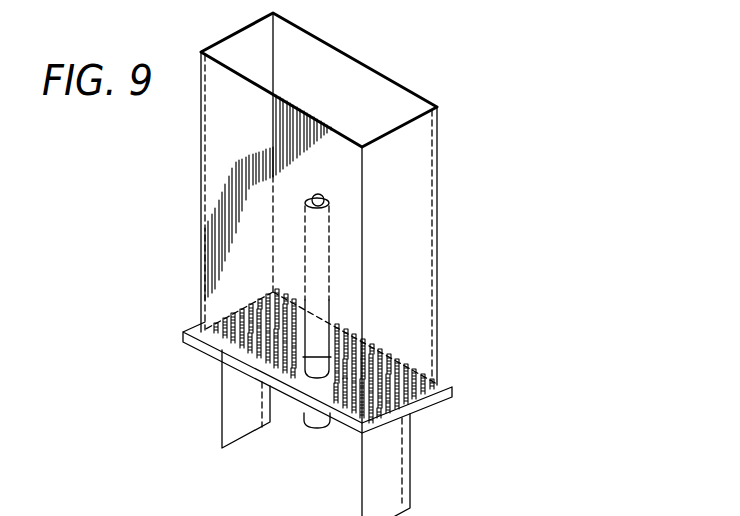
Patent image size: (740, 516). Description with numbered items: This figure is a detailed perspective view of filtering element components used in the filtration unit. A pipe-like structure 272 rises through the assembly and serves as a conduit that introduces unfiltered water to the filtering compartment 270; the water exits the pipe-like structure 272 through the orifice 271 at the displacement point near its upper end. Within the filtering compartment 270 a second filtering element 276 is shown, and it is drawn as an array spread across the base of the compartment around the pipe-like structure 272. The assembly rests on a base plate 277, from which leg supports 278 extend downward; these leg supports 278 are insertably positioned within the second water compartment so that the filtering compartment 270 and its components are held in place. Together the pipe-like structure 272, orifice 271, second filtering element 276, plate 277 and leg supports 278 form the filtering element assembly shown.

The filtering compartment 270 is at (397, 267).
The orifice 271 is at (318, 196).
The pipe-like structure 272 is at (329, 235).
The second filtering element 276 is at (233, 332).
The base plate 277 is at (430, 405).
The leg supports 278 is at (222, 417).